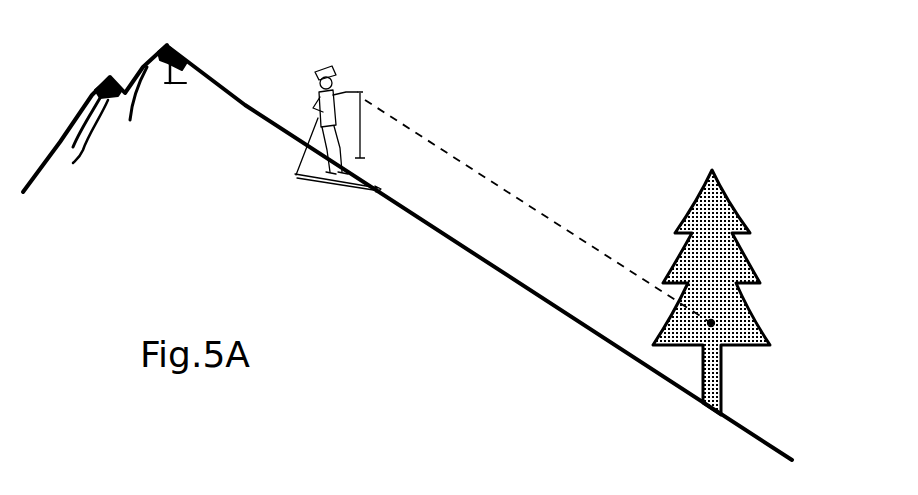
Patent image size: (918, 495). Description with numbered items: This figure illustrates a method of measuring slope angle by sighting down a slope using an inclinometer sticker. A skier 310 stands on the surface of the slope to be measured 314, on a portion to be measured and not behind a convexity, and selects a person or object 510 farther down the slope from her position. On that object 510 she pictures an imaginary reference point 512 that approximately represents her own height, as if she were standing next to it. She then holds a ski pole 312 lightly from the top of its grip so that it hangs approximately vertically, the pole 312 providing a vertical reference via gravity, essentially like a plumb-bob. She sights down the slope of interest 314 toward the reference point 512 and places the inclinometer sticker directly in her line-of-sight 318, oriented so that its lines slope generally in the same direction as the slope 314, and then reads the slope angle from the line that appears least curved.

The skier 310 is at (312, 100).
The ski pole 312 is at (360, 118).
The surface of the slope to be measured 314 is at (513, 284).
The line-of-sight 318 is at (515, 197).
The person or object 510 is at (697, 187).
The imaginary reference point 512 is at (716, 322).